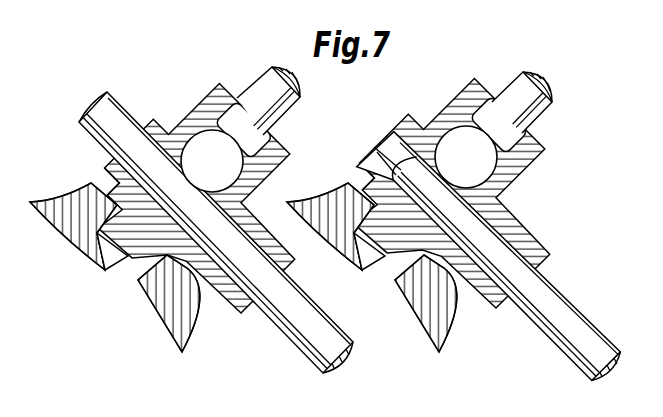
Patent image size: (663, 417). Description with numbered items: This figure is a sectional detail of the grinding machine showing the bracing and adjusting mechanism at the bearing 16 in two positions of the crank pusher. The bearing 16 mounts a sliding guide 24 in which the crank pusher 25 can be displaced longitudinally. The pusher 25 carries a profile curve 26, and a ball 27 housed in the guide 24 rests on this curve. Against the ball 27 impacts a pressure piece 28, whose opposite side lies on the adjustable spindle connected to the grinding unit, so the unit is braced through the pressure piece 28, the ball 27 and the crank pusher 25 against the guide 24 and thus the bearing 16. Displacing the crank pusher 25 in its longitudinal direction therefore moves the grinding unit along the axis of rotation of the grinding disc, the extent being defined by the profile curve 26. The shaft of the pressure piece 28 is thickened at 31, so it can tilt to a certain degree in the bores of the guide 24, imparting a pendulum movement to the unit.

The bearing 16 is at (173, 305).
The sliding guide 24 is at (105, 172).
The crank pusher 25 is at (287, 318).
The profile curve 26 is at (137, 125).
The ball 27 is at (212, 163).
The pressure piece 28 is at (277, 112).
The thickened shaft portion 31 is at (233, 120).